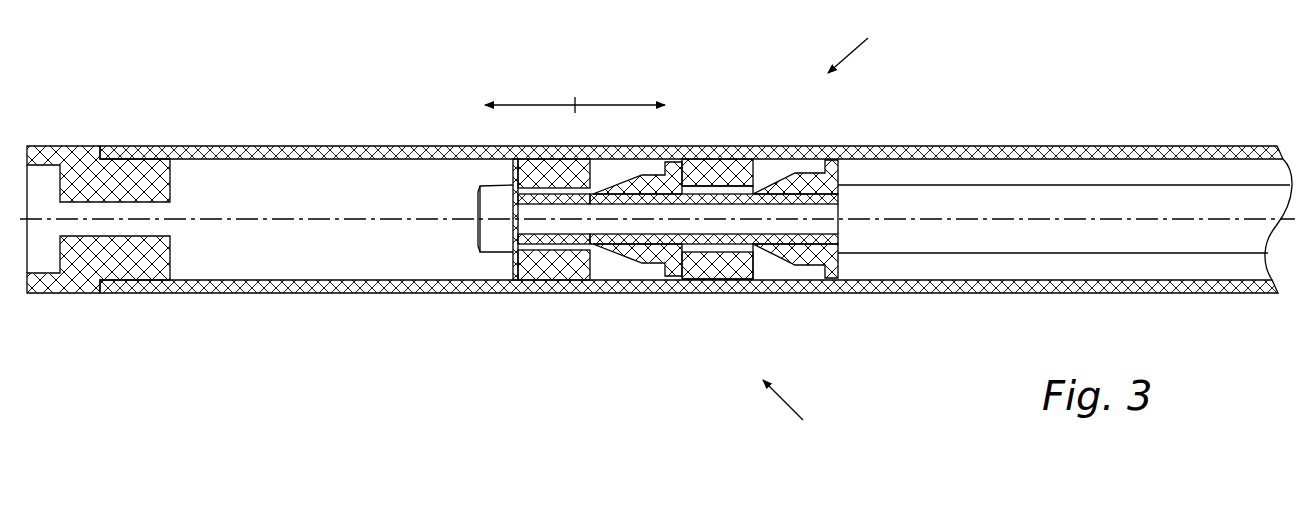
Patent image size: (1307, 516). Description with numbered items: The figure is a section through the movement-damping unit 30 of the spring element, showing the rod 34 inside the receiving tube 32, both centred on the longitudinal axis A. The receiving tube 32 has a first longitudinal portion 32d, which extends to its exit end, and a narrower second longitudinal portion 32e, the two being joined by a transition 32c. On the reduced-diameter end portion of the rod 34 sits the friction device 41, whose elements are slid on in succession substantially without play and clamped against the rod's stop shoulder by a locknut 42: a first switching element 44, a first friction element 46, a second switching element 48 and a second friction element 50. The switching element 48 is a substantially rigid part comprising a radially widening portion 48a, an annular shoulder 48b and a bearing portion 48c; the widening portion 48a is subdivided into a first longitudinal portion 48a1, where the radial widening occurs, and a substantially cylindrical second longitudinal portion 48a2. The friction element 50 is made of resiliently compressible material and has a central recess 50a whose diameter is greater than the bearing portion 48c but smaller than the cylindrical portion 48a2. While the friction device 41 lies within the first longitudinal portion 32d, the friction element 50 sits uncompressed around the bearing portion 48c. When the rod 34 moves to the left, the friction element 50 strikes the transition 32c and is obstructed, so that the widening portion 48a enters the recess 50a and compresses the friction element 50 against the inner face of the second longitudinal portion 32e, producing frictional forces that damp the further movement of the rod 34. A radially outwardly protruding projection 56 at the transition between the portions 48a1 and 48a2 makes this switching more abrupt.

The actuating device 30 is at (863, 42).
The receiving tube 32 is at (997, 148).
The transition 32c is at (581, 84).
The first longitudinal portion 32d is at (642, 88).
The second longitudinal portion 32e is at (518, 84).
The rod 34 is at (967, 240).
The friction device 41 is at (801, 417).
The locknut 42 is at (376, 292).
The first switching element 44 is at (832, 164).
The first friction element 46 is at (758, 165).
The second switching element 48 is at (669, 257).
The radially widening portion 48a is at (678, 313).
The first longitudinal portion 48a1 is at (618, 246).
The second longitudinal portion 48a2 is at (640, 246).
The annular shoulder 48b is at (682, 264).
The bearing portion 48c is at (545, 263).
The second friction element 50 is at (490, 242).
The central recess 50a is at (483, 186).
The radially outwardly protruding projection 56 is at (643, 173).
The longitudinal axis A is at (1088, 221).